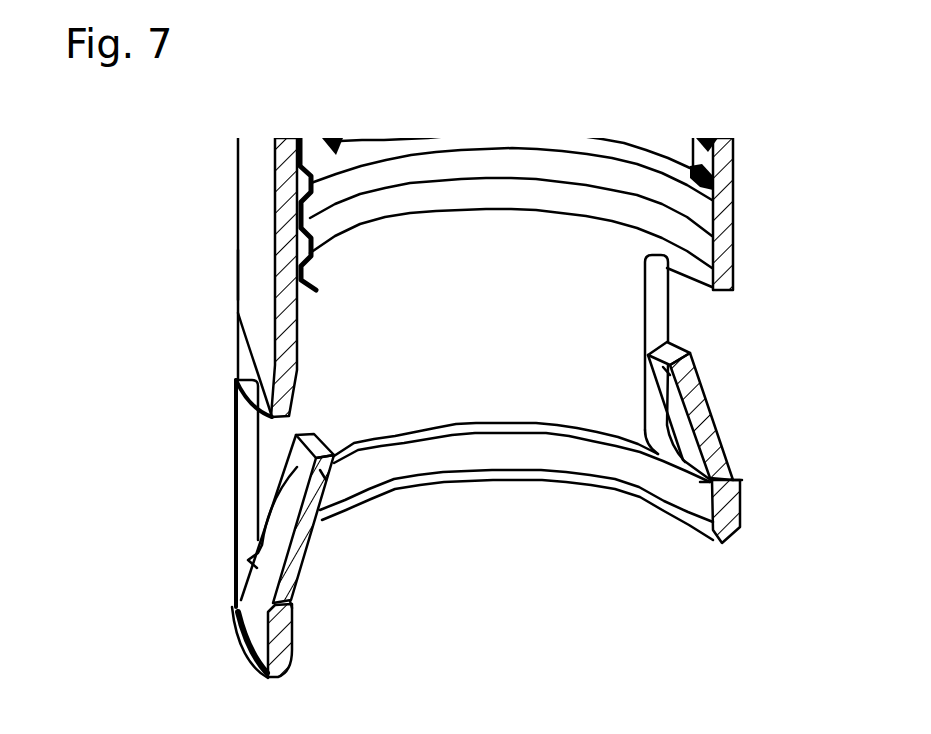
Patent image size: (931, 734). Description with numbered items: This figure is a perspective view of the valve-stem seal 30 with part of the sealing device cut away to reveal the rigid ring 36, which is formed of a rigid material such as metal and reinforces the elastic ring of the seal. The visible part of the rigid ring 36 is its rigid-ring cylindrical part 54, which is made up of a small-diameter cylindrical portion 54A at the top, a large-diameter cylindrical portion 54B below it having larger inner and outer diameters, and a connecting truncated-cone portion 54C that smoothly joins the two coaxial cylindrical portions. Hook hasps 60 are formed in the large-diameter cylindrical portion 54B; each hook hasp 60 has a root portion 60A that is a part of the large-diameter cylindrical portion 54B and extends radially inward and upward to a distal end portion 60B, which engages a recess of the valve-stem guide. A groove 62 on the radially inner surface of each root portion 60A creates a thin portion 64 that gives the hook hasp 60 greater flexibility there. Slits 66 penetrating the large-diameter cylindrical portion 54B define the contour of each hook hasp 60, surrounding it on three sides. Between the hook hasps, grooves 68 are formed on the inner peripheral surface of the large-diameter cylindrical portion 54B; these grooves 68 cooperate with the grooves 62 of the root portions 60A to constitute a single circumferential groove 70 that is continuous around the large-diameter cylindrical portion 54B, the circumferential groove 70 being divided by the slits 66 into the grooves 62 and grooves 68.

The valve-stem seal 30 is at (150, 179).
The rigid ring 36 is at (238, 178).
The rigid-ring cylindrical part 54 is at (238, 218).
The small-diameter cylindrical portion 54A is at (238, 265).
The large-diameter cylindrical portion 54B is at (233, 604).
The connecting truncated-cone portion 54C is at (241, 340).
The hook hasp 60 is at (297, 484).
The root portion 60A is at (294, 638).
The distal end portion 60B is at (322, 478).
The groove 62 is at (290, 604).
The thin portion 64 is at (246, 634).
The slit 66 is at (247, 458).
The groove 68 is at (473, 425).
The circumferential groove 70 is at (397, 583).